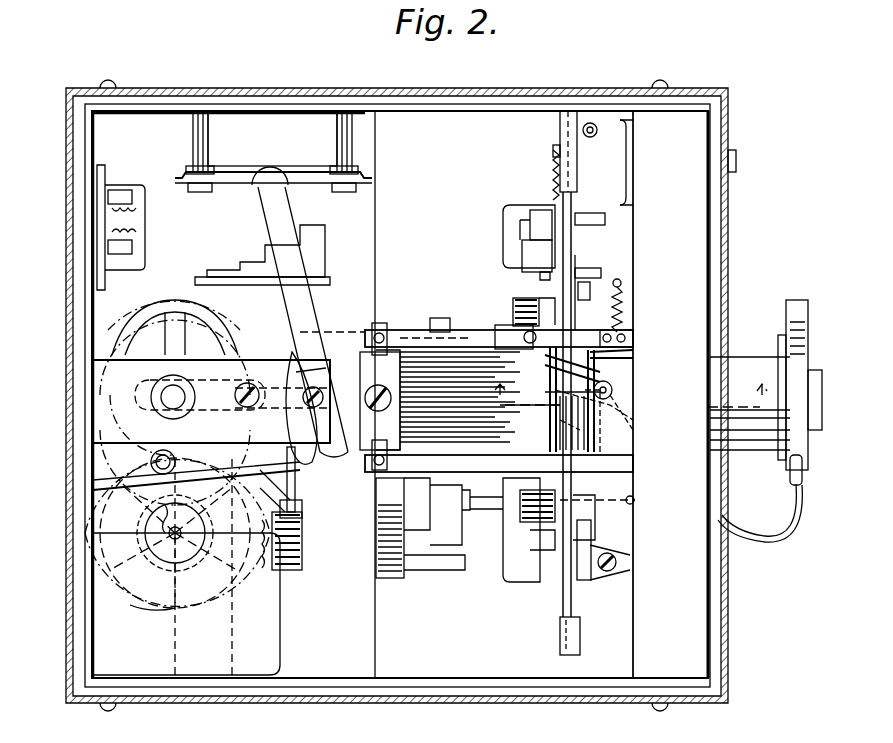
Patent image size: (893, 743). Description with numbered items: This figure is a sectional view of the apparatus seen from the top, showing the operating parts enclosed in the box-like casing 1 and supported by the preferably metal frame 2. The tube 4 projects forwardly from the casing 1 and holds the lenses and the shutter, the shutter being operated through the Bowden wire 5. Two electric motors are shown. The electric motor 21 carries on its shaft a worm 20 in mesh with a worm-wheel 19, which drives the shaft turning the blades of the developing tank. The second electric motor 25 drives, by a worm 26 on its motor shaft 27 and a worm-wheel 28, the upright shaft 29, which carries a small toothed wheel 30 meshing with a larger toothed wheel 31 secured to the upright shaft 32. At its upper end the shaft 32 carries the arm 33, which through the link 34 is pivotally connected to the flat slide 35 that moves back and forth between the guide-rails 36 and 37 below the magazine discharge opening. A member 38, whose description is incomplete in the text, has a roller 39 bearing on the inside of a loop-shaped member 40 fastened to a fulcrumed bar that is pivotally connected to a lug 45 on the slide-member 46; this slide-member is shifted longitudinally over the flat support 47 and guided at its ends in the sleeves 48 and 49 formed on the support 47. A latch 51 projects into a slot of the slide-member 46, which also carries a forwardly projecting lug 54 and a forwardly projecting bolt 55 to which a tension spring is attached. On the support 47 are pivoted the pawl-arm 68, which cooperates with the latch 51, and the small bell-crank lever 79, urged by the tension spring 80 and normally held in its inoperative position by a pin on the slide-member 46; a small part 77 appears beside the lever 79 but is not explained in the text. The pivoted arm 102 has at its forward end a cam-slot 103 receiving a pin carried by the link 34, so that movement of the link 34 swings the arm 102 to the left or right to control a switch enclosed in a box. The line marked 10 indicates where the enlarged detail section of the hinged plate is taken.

The casing 1 is at (598, 96).
The frame 2 is at (468, 114).
The tube 4 is at (770, 440).
The Bowden wire 5 is at (772, 538).
The section line 10- 10 is at (631, 388).
The worm-wheel 19 is at (638, 498).
The worm 20 is at (520, 520).
The electric motor 21 is at (392, 585).
The second electric motor 25 is at (208, 290).
The worm 26 is at (292, 572).
The motor shaft 27 is at (290, 482).
The worm-wheel 28 is at (203, 618).
The upright shaft 29 is at (166, 566).
The small toothed wheel 30 is at (158, 565).
The larger toothed wheel 31 is at (135, 310).
The upright shaft 32 is at (167, 388).
The arm 33 is at (235, 414).
The link 34 is at (435, 400).
The flat slide 35 is at (447, 380).
The guide-rail 36 is at (455, 460).
The guide-rail 37 is at (410, 327).
The arc guide 38 is at (155, 440).
The roller 39 is at (194, 734).
The loop-shaped member 40 is at (93, 477).
The lug 45 is at (525, 330).
The slide-member 46 is at (545, 240).
The support 47 is at (625, 632).
The sleeve 48 is at (558, 648).
The sleeve 49 is at (558, 140).
The latch 51 is at (580, 545).
The forwardly projecting lug 54 is at (585, 272).
The forwardly projecting bolt 55 is at (622, 183).
The pawl-arm 68 is at (620, 578).
The contact 77 is at (592, 289).
The bell-crank lever 79 is at (633, 393).
The tension spring 80 is at (628, 320).
The pivoted arm 102 is at (303, 310).
The cam-slot 103 is at (333, 462).